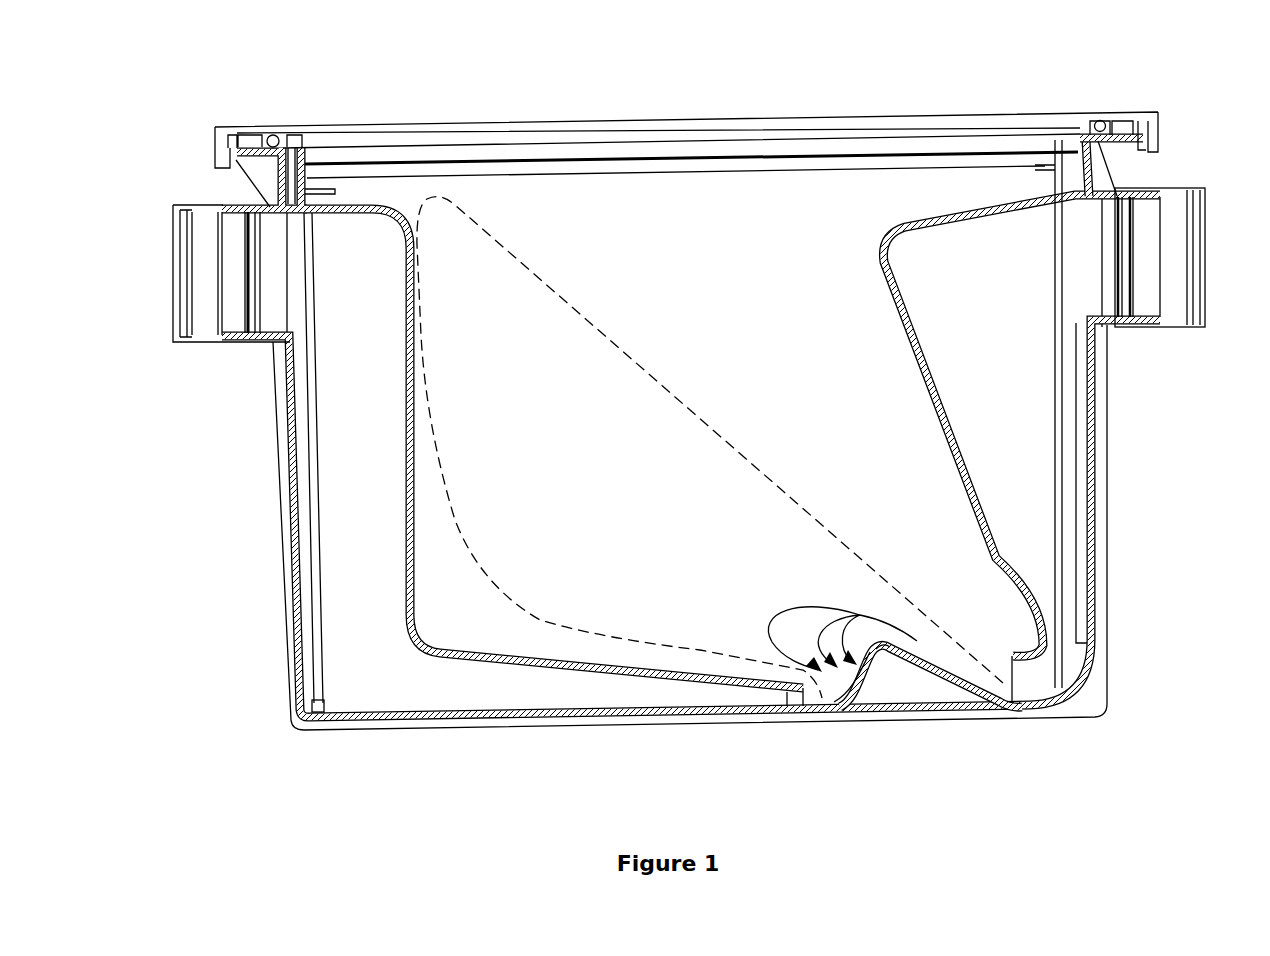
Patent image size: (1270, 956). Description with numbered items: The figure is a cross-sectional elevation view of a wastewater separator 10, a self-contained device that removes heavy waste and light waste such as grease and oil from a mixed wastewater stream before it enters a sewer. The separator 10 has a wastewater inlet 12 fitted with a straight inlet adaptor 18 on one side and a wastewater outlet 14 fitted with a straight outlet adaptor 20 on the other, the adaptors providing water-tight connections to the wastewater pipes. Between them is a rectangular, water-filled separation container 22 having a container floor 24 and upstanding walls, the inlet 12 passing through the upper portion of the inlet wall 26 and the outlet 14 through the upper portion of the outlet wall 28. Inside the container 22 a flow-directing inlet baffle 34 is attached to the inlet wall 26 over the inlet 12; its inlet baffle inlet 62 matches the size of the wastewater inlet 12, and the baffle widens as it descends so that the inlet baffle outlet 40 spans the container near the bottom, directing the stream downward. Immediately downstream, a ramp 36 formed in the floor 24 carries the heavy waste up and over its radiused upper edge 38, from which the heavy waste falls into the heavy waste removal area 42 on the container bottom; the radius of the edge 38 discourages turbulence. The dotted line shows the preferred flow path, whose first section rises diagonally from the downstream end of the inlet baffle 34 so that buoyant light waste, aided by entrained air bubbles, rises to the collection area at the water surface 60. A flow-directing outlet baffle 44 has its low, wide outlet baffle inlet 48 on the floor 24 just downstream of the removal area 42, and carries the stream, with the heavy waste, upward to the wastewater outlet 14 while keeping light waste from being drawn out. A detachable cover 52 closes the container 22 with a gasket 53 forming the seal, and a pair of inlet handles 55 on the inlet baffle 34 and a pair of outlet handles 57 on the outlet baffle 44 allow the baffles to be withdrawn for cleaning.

The wastewater separator 10 is at (1162, 546).
The wastewater inlet 12 is at (1117, 333).
The wastewater outlet 14 is at (272, 345).
The inlet adaptor 18 is at (1183, 190).
The outlet adaptor 20 is at (198, 342).
The separation container 22 is at (291, 720).
The container floor 24 is at (420, 724).
The inlet wall 26 is at (1094, 416).
The outlet wall 28 is at (290, 414).
The flow-directing inlet baffle 34 is at (938, 368).
The ramp 36 is at (934, 680).
The upper edge of ramp 38 is at (880, 652).
The inlet baffle outlet 40 is at (1012, 685).
The heavy waste removal area 42 is at (840, 700).
The flow-directing outlet baffle 44 is at (405, 601).
The outlet baffle inlet 48 is at (786, 708).
The cover 52 is at (1068, 112).
The gasket 53 is at (277, 134).
The inlet handles 55 is at (1040, 167).
The outlet handles 57 is at (338, 190).
The surface of the water 60 is at (795, 170).
The inlet baffle inlet 62 is at (1046, 258).